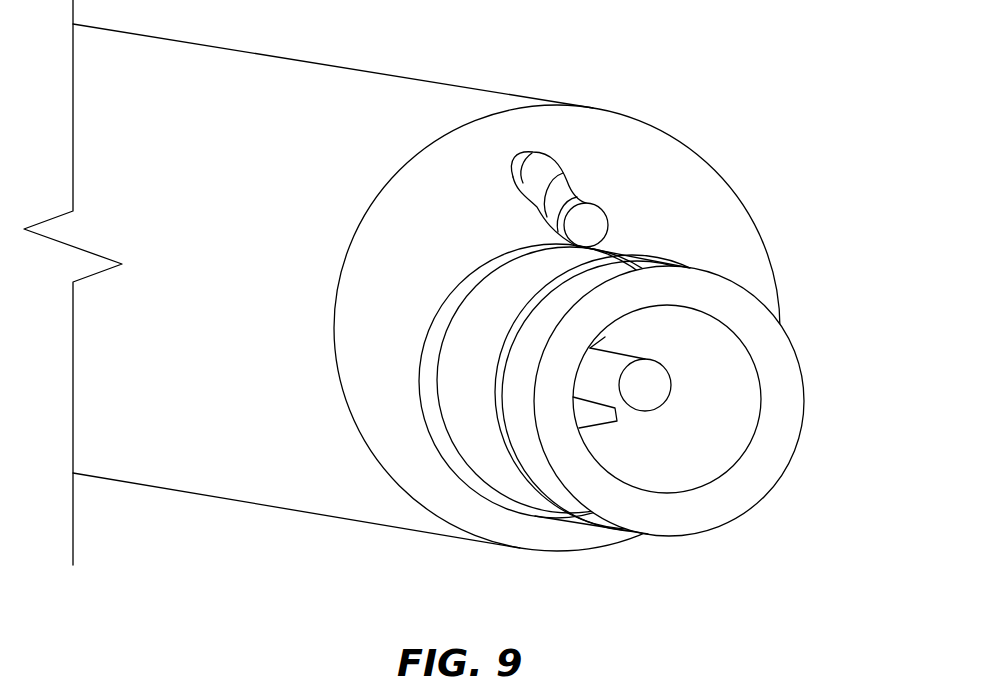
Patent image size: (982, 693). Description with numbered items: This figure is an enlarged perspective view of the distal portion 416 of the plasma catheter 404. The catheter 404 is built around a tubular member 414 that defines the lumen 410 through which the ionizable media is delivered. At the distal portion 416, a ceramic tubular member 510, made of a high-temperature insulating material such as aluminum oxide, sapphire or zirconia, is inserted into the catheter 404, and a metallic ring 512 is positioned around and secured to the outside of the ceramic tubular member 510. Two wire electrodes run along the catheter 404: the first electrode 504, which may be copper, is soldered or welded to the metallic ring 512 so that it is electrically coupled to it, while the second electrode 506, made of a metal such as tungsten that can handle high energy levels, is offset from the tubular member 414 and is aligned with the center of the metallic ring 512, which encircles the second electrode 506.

The plasma catheter 404 is at (670, 100).
The tubular member 414 is at (694, 190).
The first electrode 504 is at (587, 223).
The second electrode 506 is at (648, 384).
The lumen 410 is at (724, 446).
The ceramic tubular member 510 is at (737, 497).
The metallic ring 512 is at (470, 425).
The distal portion 416 is at (599, 572).